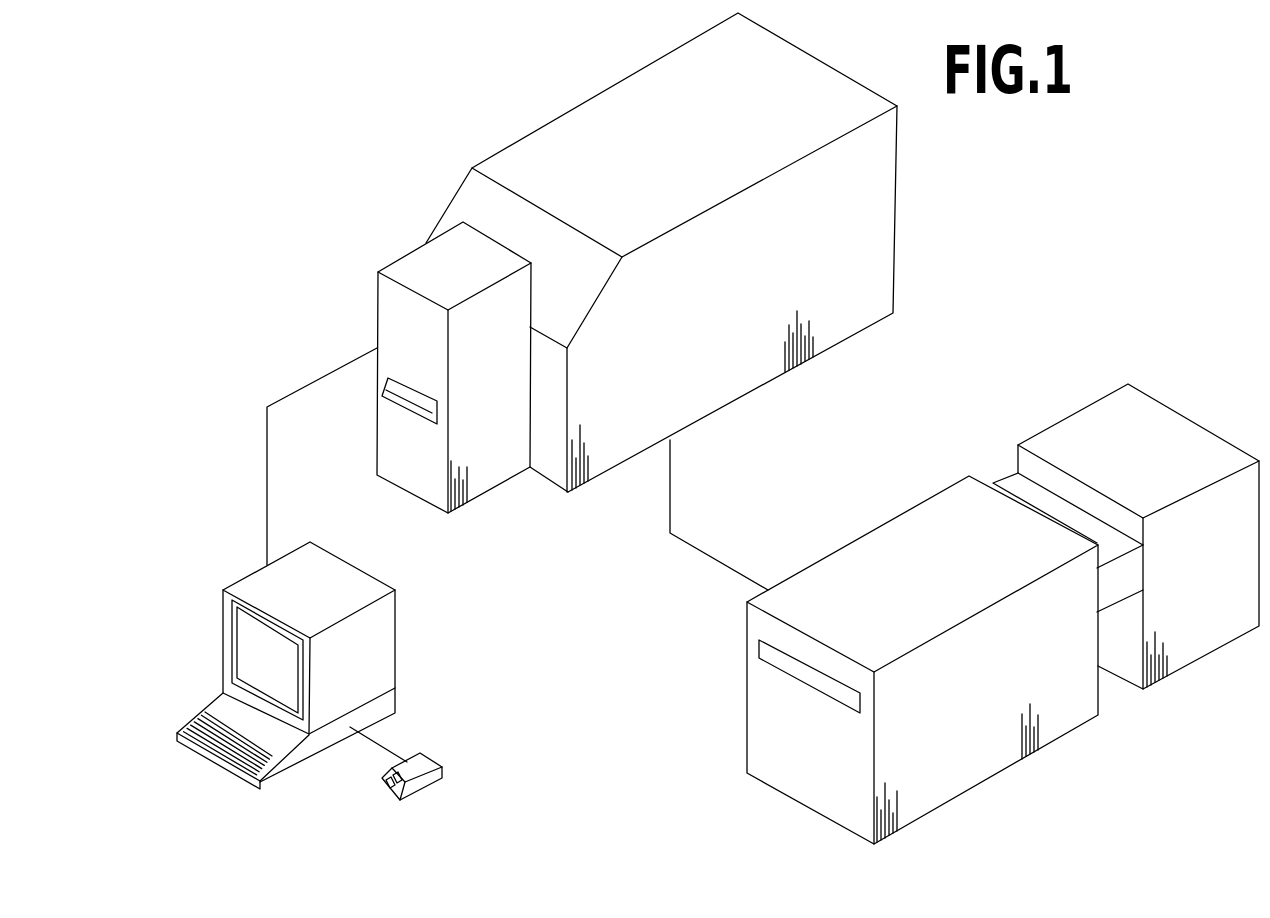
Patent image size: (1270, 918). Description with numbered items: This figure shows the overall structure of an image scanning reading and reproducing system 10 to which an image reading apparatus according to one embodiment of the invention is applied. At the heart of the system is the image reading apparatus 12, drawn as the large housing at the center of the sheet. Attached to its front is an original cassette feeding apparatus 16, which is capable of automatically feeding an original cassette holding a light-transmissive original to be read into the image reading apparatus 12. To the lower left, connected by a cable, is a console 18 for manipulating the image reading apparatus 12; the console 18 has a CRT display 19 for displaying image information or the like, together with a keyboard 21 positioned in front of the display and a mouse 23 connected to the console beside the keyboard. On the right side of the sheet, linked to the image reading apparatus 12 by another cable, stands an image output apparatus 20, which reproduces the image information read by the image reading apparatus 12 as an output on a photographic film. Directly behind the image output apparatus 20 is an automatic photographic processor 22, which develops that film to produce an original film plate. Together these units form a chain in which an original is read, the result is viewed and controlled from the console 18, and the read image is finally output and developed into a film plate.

The image scanning reading and reproducing system 10 is at (497, 125).
The image reading apparatus 12 is at (883, 229).
The original cassette feeding apparatus 16 is at (397, 270).
The console 18 is at (314, 662).
The CRT display 19 is at (237, 630).
The image output apparatus 20 is at (898, 529).
The keyboard 21 is at (278, 778).
The automatic photographic processor 22 is at (1049, 441).
The mouse 23 is at (442, 765).